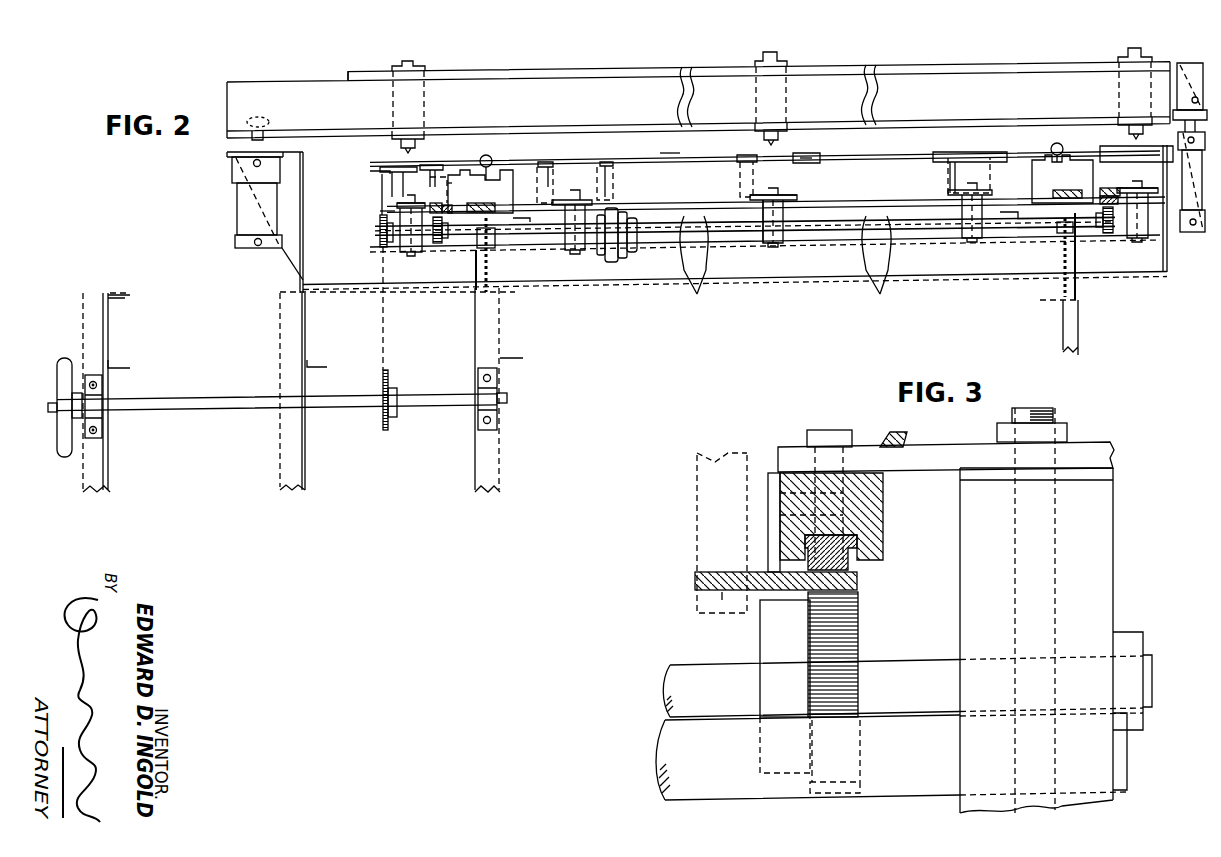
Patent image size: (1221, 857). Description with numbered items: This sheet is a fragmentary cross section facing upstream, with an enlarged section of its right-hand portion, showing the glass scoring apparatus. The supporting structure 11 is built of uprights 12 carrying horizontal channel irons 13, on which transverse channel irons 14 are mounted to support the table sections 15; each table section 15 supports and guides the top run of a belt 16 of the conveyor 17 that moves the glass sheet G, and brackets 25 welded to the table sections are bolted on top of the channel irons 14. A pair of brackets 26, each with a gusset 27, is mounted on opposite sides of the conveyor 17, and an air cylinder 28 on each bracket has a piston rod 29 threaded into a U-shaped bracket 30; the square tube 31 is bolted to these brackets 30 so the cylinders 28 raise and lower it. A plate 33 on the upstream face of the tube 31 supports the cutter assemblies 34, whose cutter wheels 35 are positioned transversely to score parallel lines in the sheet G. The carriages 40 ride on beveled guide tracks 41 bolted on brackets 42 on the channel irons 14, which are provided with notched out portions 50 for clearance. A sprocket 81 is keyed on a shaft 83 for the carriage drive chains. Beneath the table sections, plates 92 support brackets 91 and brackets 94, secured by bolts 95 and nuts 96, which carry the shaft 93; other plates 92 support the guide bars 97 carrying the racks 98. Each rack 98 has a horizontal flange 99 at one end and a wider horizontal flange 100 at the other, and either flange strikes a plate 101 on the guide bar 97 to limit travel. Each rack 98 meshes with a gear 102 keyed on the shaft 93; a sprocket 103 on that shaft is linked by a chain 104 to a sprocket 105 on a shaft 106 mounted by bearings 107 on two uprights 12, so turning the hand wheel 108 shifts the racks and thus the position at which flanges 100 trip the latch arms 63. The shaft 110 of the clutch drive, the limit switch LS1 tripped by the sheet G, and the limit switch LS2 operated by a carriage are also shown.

In FIG. 2, the supporting structure 11 is at (73, 343).
In FIG. 2, the uprights 12 is at (83, 293).
In FIG. 2, the horizontal channel irons 13 is at (113, 293).
In FIG. 2, the transverse channel irons 14 is at (592, 285).
In FIG. 2, the table sections 15 is at (640, 174).
In FIG. 3, the table sections 15 is at (907, 445).
In FIG. 2, the belts 16 is at (420, 163).
In FIG. 2, the conveyor 17 is at (384, 190).
In FIG. 2, the brackets 25 is at (960, 173).
In FIG. 2, the brackets 26 is at (380, 212).
In FIG. 2, the gusset 27 is at (292, 248).
In FIG. 2, the air cylinder 28 is at (237, 203).
In FIG. 2, the piston rod 29 is at (253, 143).
In FIG. 2, the U-shaped bracket 30 is at (250, 117).
In FIG. 2, the square tube 31 is at (868, 64).
In FIG. 2, the plate 33 is at (352, 72).
In FIG. 2, the cutter assemblies 34 is at (425, 68).
In FIG. 2, the cutter wheel 35 is at (400, 152).
In FIG. 2, the carriages 40 is at (498, 170).
In FIG. 2, the guide track 41 is at (495, 205).
In FIG. 2, the brackets 42 is at (470, 268).
In FIG. 2, the notched out portions 50 is at (520, 224).
In FIG. 3, the latch arms 63 is at (697, 515).
In FIG. 2, the sprocket 81 is at (484, 290).
In FIG. 2, the shaft 83 is at (879, 268).
In FIG. 2, the brackets 91 is at (1150, 278).
In FIG. 3, the brackets 91 is at (1113, 506).
In FIG. 2, the plates 92 is at (395, 204).
In FIG. 3, the plates 92 is at (966, 447).
In FIG. 2, the shaft 93 is at (698, 269).
In FIG. 3, the shaft 93 is at (670, 684).
In FIG. 2, the brackets 94 is at (783, 243).
In FIG. 2, the bolts 95 is at (770, 247).
In FIG. 3, the bolts 95 is at (1053, 415).
In FIG. 2, the nuts 96 is at (778, 178).
In FIG. 3, the nuts 96 is at (1067, 435).
In FIG. 2, the guide bars 97 is at (430, 203).
In FIG. 3, the guide bars 97 is at (883, 508).
In FIG. 2, the racks 98 is at (455, 200).
In FIG. 3, the racks 98 is at (886, 537).
In FIG. 3, the horizontal flange 99 is at (695, 583).
In FIG. 2, the horizontal flange 100 is at (784, 238).
In FIG. 3, the horizontal flange 100 is at (722, 600).
In FIG. 3, the plate 101 is at (770, 473).
In FIG. 2, the gear 102 is at (783, 243).
In FIG. 3, the gear 102 is at (860, 635).
In FIG. 2, the sprocket 103 is at (380, 246).
In FIG. 2, the chain 104 is at (382, 333).
In FIG. 2, the sprocket 105 is at (383, 422).
In FIG. 2, the shaft 106 is at (443, 406).
In FIG. 2, the bearings 107 is at (102, 428).
In FIG. 2, the hand wheel 108 is at (70, 460).
In FIG. 3, the shaft 110 is at (665, 756).
In FIG. 2, the limit switch LS1 is at (812, 158).
In FIG. 2, the limit switch LS2 is at (471, 180).
In FIG. 2, the glass sheets G is at (672, 153).